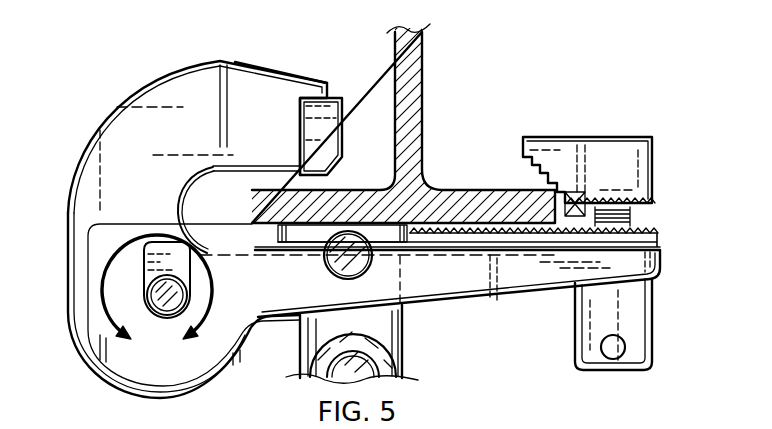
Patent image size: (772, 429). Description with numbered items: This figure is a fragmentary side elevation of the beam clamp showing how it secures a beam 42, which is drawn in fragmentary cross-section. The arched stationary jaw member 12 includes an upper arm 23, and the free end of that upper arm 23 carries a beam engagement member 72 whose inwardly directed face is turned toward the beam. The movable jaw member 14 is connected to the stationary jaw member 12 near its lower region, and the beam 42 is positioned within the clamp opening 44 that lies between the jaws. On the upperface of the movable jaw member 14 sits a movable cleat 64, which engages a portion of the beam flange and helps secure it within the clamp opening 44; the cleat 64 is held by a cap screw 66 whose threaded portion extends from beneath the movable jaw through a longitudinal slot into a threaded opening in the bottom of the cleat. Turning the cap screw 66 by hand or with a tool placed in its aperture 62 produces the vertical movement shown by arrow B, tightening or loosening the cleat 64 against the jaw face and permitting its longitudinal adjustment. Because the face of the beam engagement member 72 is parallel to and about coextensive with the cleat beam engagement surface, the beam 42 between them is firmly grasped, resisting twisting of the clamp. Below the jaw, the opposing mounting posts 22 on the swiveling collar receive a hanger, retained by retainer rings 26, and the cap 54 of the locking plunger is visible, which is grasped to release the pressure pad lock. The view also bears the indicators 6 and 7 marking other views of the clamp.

The stationary jaw member 12 is at (95, 363).
The movable jaw member 14 is at (512, 277).
The mounting posts 22 is at (355, 363).
The upper arm 23 is at (233, 73).
The retainer rings 26 is at (305, 364).
The beam 42 is at (407, 53).
The clamp opening 44 is at (210, 205).
The cap 54 is at (329, 271).
The aperture 62 is at (618, 353).
The movable cleat 64 is at (618, 147).
The cap screw 66 is at (628, 322).
The beam engagement member 72 is at (322, 125).
The rotation direction indicator 6 is at (157, 296).
The section line 7- 7 is at (253, 307).
The arrow B is at (670, 150).